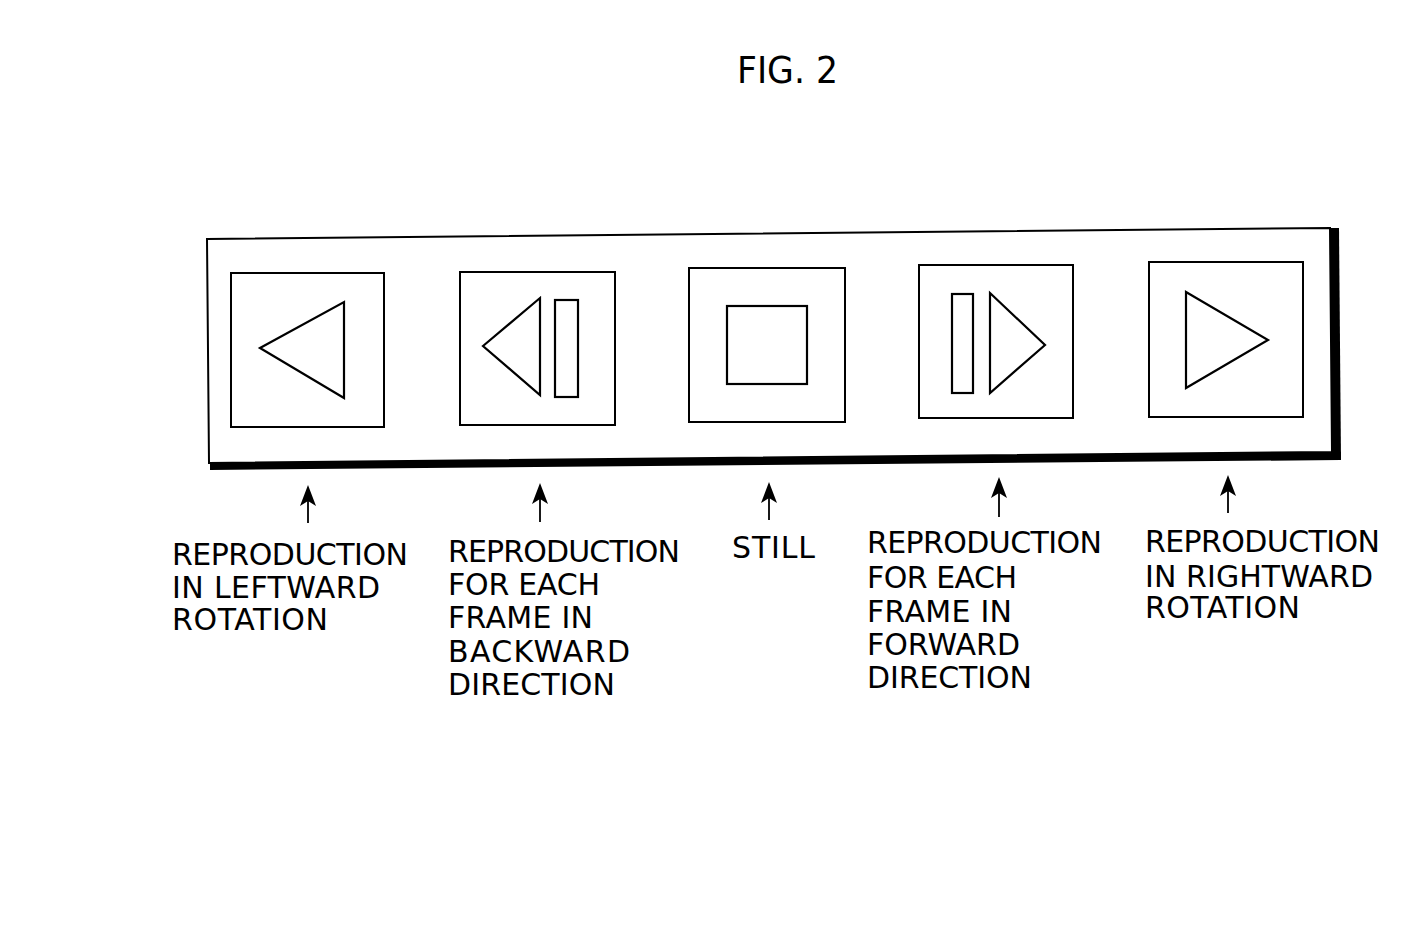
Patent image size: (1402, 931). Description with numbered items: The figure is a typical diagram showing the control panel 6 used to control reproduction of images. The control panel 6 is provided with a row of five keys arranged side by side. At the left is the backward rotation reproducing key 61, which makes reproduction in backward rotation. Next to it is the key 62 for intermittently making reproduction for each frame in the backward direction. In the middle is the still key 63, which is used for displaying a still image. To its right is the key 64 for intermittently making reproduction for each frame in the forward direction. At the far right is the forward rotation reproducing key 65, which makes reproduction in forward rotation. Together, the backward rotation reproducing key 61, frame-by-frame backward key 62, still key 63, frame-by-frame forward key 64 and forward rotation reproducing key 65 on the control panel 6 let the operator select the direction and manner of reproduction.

The control panel 6 is at (708, 201).
The backward rotation reproducing key 61 is at (298, 272).
The key for intermittently making reproduction for each frame in the backward direct 62 is at (520, 268).
The still key 63 is at (750, 265).
The key for intermittently making reproduction for each frame in the forward directi 64 is at (978, 263).
The forward rotation reproducing key 65 is at (1212, 260).